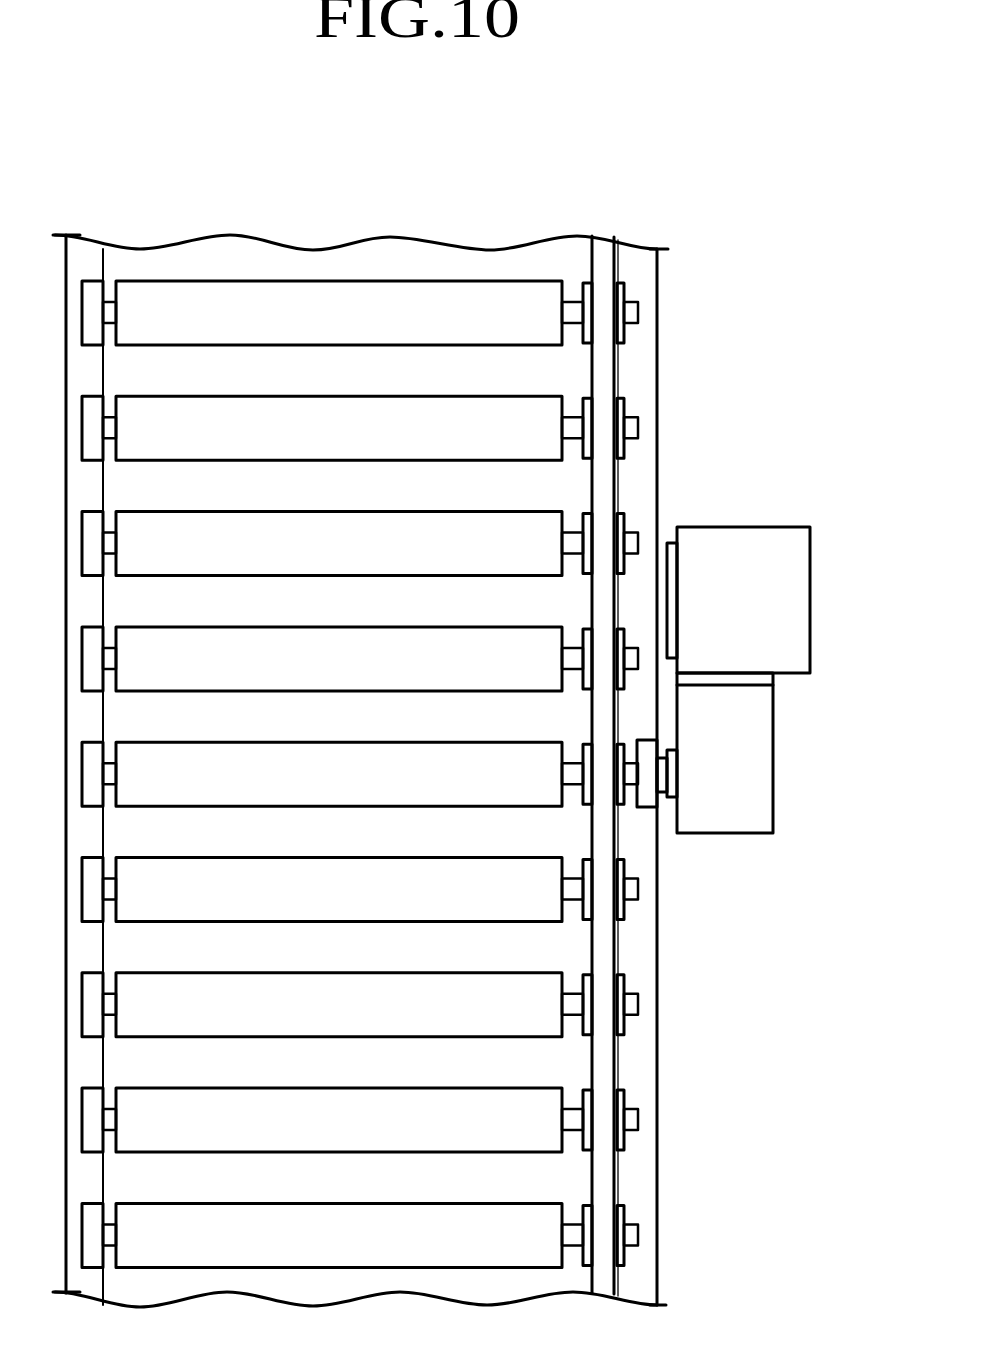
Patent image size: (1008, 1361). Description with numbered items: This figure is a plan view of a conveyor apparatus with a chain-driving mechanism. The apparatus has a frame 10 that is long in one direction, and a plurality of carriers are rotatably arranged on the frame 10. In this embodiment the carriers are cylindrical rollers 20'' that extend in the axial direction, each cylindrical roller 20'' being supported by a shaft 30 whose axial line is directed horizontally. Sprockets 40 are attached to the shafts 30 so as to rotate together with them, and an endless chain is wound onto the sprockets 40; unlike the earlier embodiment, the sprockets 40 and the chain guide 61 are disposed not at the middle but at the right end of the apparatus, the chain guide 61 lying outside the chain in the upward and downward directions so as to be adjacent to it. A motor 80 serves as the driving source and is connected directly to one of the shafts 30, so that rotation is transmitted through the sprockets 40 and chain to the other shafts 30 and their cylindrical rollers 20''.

The frame 10 is at (662, 457).
The cylindrical roller 20'' is at (339, 708).
The shaft 30 is at (640, 313).
The sprocket 40 is at (618, 288).
The chain guide 61 is at (615, 372).
The motor 80 is at (775, 748).